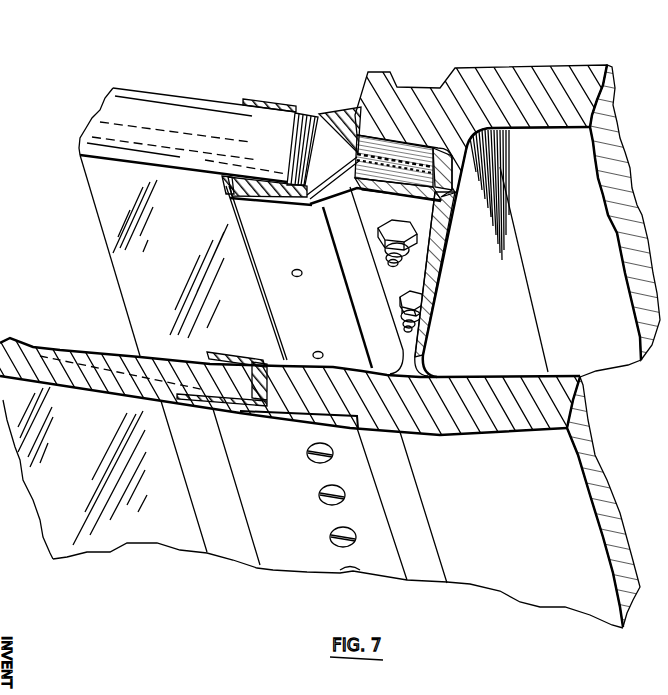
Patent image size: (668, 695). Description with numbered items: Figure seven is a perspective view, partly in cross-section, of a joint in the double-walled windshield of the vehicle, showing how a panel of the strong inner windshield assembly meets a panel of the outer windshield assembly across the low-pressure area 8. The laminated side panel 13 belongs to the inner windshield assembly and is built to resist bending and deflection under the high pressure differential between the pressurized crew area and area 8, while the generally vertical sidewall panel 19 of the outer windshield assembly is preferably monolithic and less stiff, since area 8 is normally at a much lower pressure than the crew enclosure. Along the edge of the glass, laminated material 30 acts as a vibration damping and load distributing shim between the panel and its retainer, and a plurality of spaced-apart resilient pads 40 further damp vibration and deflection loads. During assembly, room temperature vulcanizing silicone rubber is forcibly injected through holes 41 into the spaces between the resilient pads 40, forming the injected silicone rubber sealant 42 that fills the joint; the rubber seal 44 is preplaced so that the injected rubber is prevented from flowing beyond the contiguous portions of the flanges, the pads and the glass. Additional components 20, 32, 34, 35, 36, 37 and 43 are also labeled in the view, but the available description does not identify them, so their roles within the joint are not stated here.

The area 8 is at (102, 314).
The side panel 13 is at (120, 206).
The sidewall panel 19 is at (128, 540).
The glazing cap 20 is at (295, 128).
The laminated material 30 is at (289, 155).
The wall opening inner surface 32 is at (463, 150).
The ribbed gasket block 34 is at (413, 152).
The shaded wall surface 35 is at (463, 145).
The wall 36 is at (538, 78).
The lower glazing bead 37 is at (280, 313).
The resilient pads 40 is at (273, 200).
The holes 41 is at (318, 350).
The injected silicone rubber sealant 42 is at (322, 190).
The sealing wedge 43 is at (343, 122).
The seal 44 is at (229, 183).